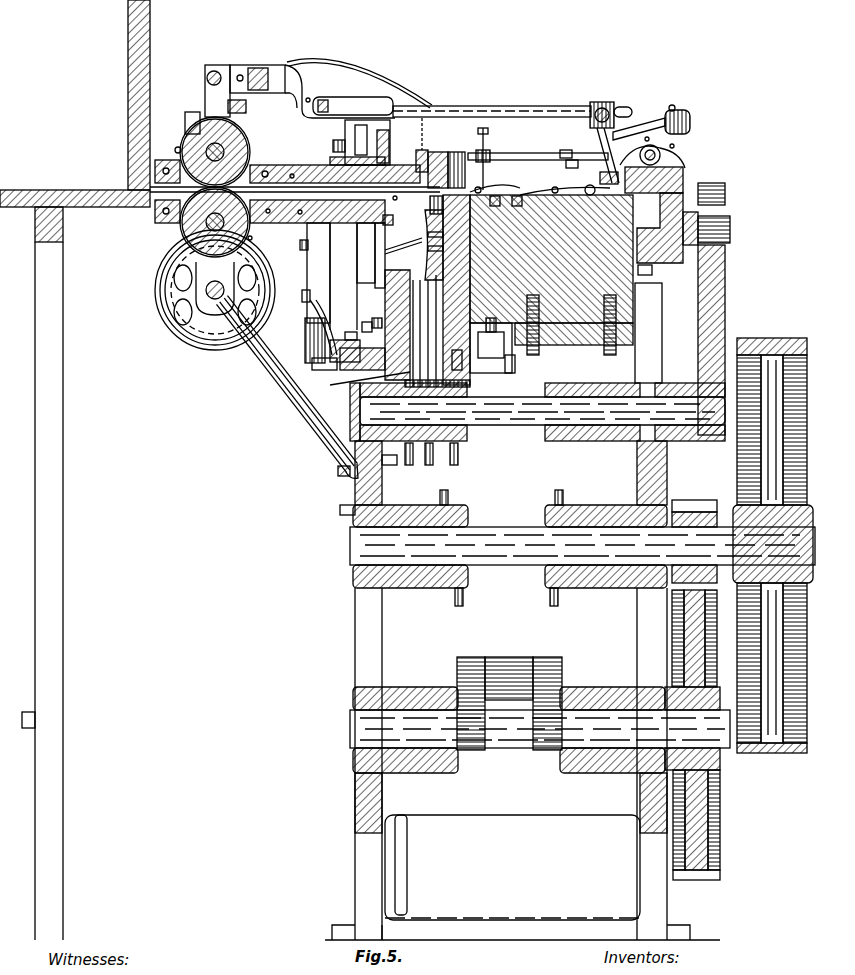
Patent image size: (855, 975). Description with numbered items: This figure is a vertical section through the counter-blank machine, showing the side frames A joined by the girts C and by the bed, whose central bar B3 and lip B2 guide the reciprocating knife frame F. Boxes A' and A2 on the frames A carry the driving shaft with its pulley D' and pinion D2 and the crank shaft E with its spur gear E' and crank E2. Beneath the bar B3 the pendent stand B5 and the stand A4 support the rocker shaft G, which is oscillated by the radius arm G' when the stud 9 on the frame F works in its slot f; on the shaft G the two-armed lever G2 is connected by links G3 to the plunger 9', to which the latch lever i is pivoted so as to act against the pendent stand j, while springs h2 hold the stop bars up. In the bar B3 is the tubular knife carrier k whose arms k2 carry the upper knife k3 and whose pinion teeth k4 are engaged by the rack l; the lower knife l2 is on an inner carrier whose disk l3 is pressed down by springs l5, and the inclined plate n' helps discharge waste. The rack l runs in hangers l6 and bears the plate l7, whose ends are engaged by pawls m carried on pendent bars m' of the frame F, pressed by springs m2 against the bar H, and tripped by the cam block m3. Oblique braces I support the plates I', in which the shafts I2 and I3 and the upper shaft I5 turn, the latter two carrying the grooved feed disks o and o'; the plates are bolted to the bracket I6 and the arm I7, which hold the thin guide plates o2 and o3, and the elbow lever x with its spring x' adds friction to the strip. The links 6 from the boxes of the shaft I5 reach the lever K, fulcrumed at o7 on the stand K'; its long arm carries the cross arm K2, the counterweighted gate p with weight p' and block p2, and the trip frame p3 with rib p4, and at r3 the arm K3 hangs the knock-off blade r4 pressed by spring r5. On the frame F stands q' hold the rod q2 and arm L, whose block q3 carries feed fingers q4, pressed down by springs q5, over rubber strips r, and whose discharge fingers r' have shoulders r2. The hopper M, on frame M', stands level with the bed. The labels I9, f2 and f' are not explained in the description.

The machine frame wall M is at (75, 121).
The frame post M' is at (57, 591).
The feed roller I' is at (215, 140).
The lower feed roller I5 is at (235, 145).
The roller bearing block I9 is at (166, 163).
The lower bearing block I3 is at (160, 220).
The pivot pin o' is at (180, 142).
The pin o is at (240, 174).
The numeral six 6 is at (219, 97).
The arm K' is at (300, 82).
The pin o7 is at (243, 76).
The spring r5 is at (335, 58).
The pin r3 is at (310, 98).
The sleeve K3 is at (360, 100).
The rod K is at (492, 103).
The rod collar K2 is at (600, 104).
The link p is at (601, 155).
The handle p' is at (659, 117).
The pivot q2 is at (640, 157).
The pawl p3 is at (606, 174).
The bed plate F is at (680, 178).
The bracket B2 is at (700, 200).
The gear f is at (729, 197).
The gear 9 is at (723, 230).
The standard G' is at (724, 340).
The bracket f2 is at (350, 150).
The bracket part f' is at (328, 155).
The pin o3 is at (316, 154).
The plate I7 is at (301, 154).
The pin r4 is at (416, 165).
The block k3 is at (442, 158).
The block k2 is at (447, 191).
The lever L is at (510, 158).
The bracket q3 is at (567, 146).
The pin q5 is at (548, 154).
The pin r' is at (475, 182).
The spring r2 is at (495, 180).
The pin r is at (491, 192).
The spring q4 is at (565, 187).
The pin p4 is at (552, 208).
The pin q' is at (572, 211).
The pin p2 is at (605, 207).
The head block B3 is at (566, 289).
The lower block B5 is at (574, 331).
The slide k is at (456, 312).
The bracket j is at (491, 343).
The pin h2 is at (496, 334).
The pin l5 is at (455, 352).
The gear 9' is at (497, 372).
The gear G3 is at (511, 368).
The rack l is at (437, 331).
The screws l2 is at (445, 455).
The pin x is at (399, 200).
The block x' is at (386, 228).
The lever n' is at (403, 250).
The guide I6 is at (346, 301).
The pin o2 is at (318, 250).
The spring m' is at (323, 309).
The pin m2 is at (305, 302).
The block m is at (324, 337).
The block m3 is at (322, 370).
The pin l6 is at (369, 327).
The block l7 is at (362, 359).
The block H is at (363, 361).
The rod k4 is at (364, 384).
The bearing l3 is at (350, 392).
The bracket A4 is at (358, 428).
The pin i is at (268, 380).
The wheel I2 is at (215, 290).
The connecting rod I is at (288, 387).
The shaft G is at (542, 428).
The bearings G2 is at (542, 421).
The frame A is at (521, 690).
The shaft bearings A' is at (582, 544).
The hub D2 is at (678, 500).
The gear wheel D' is at (773, 534).
The shaft E is at (540, 746).
The bearings A2 is at (430, 672).
The cam E2 is at (509, 691).
The gear E' is at (703, 783).
The base box C is at (512, 867).